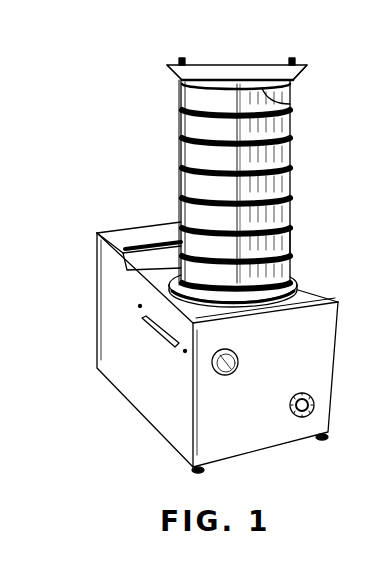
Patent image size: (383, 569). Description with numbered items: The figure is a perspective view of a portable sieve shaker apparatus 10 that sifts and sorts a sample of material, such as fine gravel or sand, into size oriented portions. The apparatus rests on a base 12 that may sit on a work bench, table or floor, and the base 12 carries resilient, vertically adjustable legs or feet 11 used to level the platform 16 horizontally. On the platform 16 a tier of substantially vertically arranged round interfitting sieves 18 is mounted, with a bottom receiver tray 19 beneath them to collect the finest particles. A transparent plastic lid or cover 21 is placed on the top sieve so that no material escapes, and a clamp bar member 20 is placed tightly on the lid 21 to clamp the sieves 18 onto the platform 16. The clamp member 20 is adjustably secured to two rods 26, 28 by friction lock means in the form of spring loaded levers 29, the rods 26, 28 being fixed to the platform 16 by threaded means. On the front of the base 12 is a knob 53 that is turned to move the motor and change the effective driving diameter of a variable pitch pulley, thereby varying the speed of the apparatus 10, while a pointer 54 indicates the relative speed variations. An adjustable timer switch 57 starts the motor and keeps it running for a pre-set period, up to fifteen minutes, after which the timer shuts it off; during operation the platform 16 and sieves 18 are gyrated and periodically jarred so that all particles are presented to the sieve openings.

The portable sieve shaker apparatus 10 is at (100, 190).
The legs or feet 11 is at (205, 472).
The base 12 is at (160, 406).
The platform 16 is at (278, 306).
The sieves 18 is at (183, 156).
The receiver tray 19 is at (278, 270).
The clamp bar member 20 is at (232, 76).
The lid or cover 21 is at (290, 105).
The rod 26 is at (180, 97).
The rod 28 is at (293, 60).
The spring loaded levers 29 is at (172, 74).
The knob 53 is at (225, 376).
The pointer 54 is at (160, 333).
The adjustable timer switch 57 is at (300, 418).